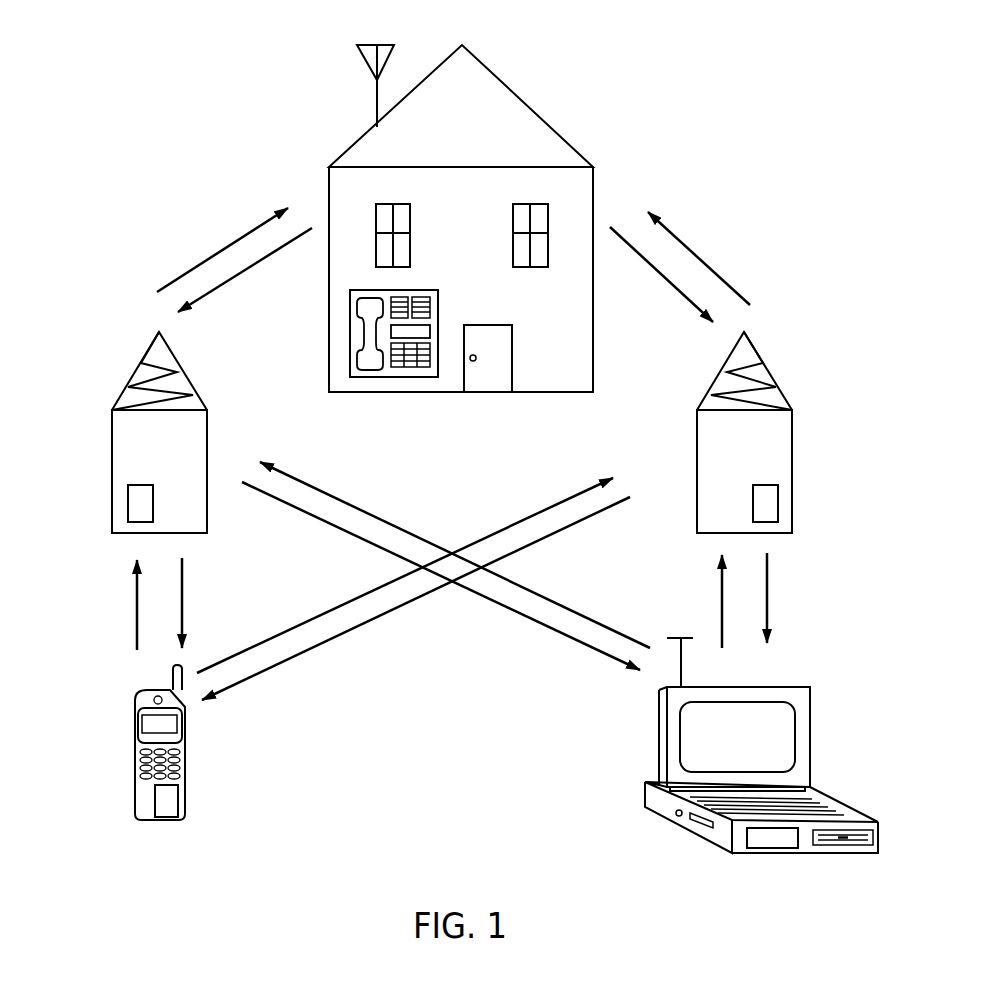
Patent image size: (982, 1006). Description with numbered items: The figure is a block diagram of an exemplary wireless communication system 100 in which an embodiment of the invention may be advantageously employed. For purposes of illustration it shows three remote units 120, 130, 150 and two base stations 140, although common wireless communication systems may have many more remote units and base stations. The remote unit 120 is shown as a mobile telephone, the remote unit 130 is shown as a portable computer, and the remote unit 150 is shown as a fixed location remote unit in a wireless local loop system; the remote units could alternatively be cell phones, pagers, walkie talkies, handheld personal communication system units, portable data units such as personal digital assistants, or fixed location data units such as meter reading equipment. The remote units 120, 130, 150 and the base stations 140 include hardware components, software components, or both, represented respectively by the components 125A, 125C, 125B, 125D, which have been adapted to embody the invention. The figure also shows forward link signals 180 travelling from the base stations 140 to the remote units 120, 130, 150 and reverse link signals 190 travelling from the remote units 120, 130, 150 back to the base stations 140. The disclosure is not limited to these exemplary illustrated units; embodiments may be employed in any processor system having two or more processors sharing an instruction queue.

The wireless communication system 100 is at (178, 88).
The remote unit 120 is at (138, 698).
The component 125A is at (168, 803).
The component 125B is at (422, 333).
The component 125C is at (778, 840).
The component 125D is at (128, 503).
The remote unit 130 is at (788, 685).
The base station 140 is at (138, 365).
The remote unit 150 is at (350, 342).
The forward link signal 180 is at (228, 245).
The reverse link signal 190 is at (232, 283).